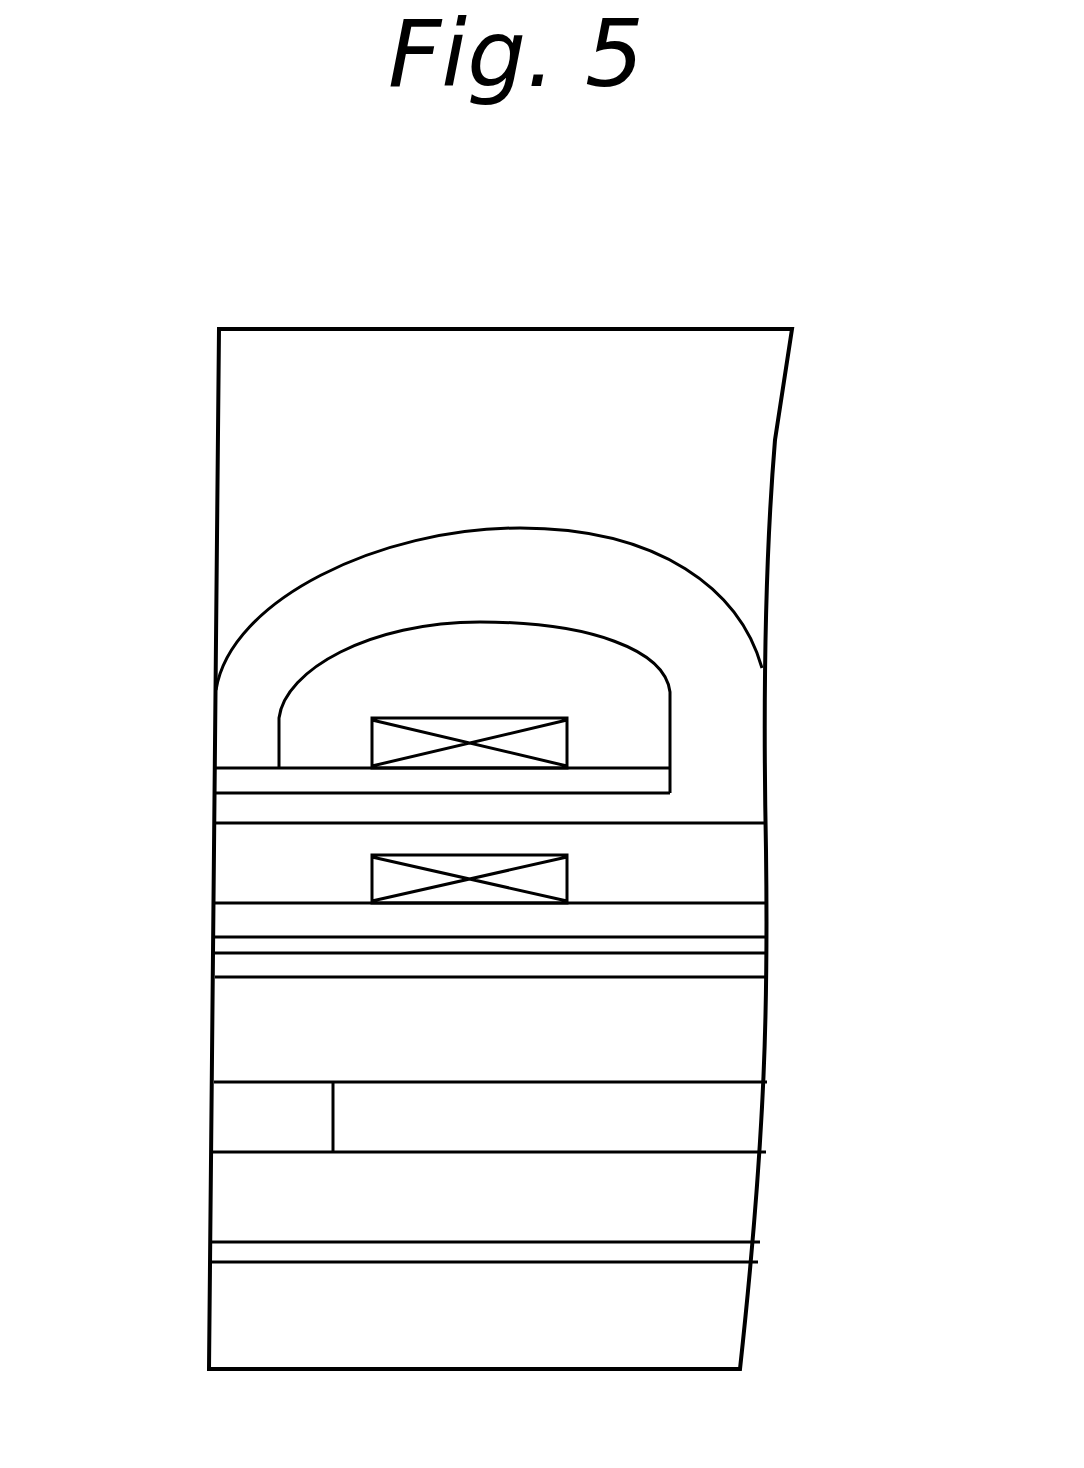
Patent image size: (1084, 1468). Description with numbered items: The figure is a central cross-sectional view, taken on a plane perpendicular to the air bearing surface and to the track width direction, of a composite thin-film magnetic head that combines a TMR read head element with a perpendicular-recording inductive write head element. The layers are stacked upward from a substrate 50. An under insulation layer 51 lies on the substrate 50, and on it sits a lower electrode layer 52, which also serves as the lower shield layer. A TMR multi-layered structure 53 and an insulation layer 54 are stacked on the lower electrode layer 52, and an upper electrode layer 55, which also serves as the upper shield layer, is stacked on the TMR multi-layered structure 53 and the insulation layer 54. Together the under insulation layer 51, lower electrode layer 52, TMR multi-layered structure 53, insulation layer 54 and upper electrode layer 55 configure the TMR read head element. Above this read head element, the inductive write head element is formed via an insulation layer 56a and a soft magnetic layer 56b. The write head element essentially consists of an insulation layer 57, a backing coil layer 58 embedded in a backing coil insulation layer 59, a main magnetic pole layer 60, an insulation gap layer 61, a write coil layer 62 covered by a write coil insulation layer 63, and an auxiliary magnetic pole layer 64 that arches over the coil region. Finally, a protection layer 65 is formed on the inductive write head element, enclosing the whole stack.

The substrate 50 is at (716, 1325).
The under insulation layer 51 is at (716, 1248).
The lower electrode layer 52 is at (716, 1192).
The TMR multi-layered structure 53 is at (257, 1117).
The insulation layer 54 is at (716, 1112).
The upper electrode layer 55 is at (718, 1027).
The insulation layer 56a is at (733, 961).
The soft magnetic layer 56b is at (735, 944).
The insulation layer 57 is at (722, 918).
The backing coil layer 58 is at (392, 880).
The backing coil insulation layer 59 is at (720, 862).
The main magnetic pole layer 60 is at (236, 806).
The insulation gap layer 61 is at (238, 781).
The write coil layer 62 is at (545, 741).
The write coil insulation layer 63 is at (490, 665).
The auxiliary magnetic pole layer 64 is at (385, 583).
The protection layer 65 is at (687, 360).